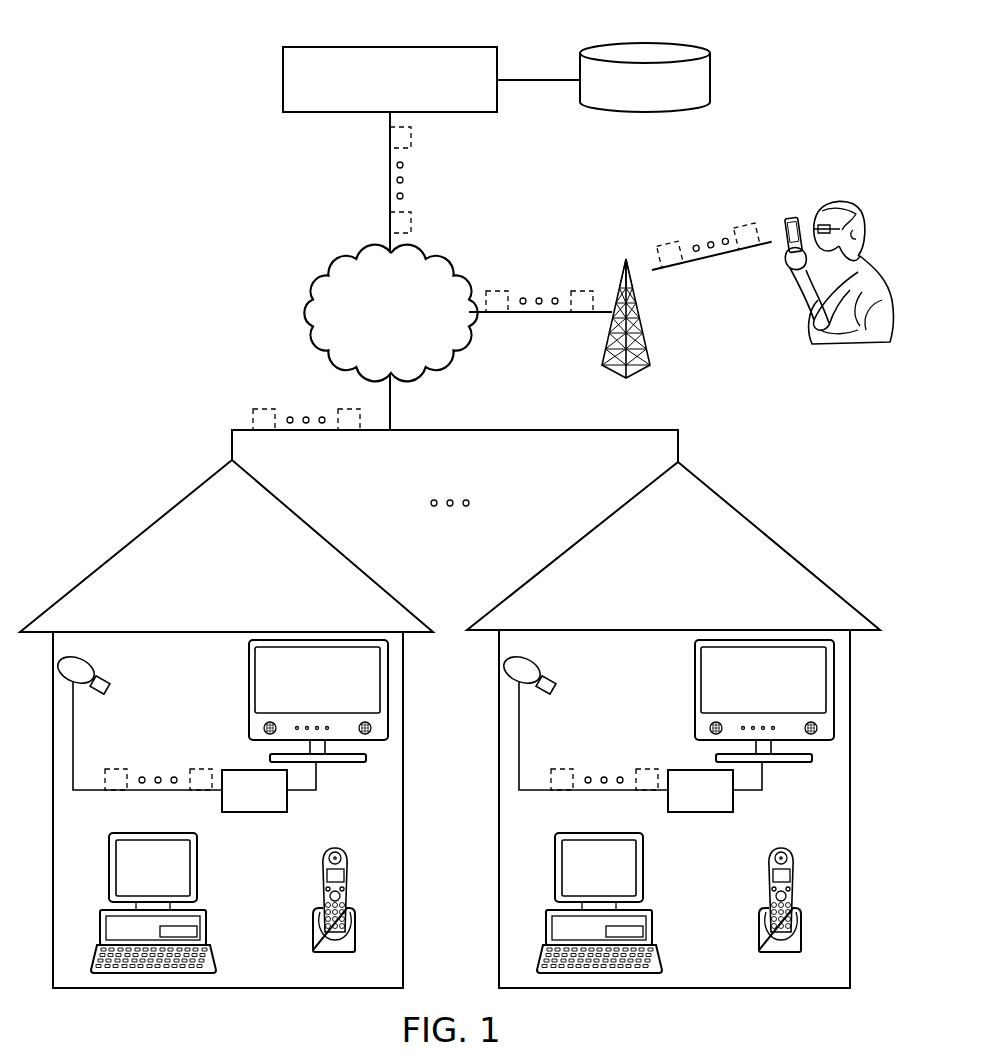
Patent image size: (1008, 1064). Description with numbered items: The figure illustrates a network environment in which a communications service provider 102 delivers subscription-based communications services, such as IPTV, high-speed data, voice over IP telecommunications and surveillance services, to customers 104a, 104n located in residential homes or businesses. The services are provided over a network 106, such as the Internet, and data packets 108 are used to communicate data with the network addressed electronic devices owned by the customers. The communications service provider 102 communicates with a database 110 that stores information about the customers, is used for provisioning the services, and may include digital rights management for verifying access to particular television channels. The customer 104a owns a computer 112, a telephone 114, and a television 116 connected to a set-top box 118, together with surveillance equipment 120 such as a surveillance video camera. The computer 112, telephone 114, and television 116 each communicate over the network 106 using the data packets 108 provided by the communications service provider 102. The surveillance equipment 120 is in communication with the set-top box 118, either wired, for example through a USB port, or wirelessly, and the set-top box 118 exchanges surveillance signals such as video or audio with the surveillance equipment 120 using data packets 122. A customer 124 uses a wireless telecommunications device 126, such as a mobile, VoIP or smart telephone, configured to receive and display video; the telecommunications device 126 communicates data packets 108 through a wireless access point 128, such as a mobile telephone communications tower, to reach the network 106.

The communications service provider 102 is at (283, 80).
The customer 104a is at (125, 548).
The customer 104n is at (782, 547).
The network 106 is at (335, 268).
The data packets 108 is at (411, 214).
The database 110 is at (710, 84).
The computer 112 is at (197, 870).
The telephone 114 is at (320, 862).
The television 116 is at (296, 697).
The set-top box 118 is at (287, 804).
The surveillance equipment 120 is at (92, 663).
The data packets 122 is at (110, 769).
The customer 124 is at (827, 252).
The telecommunications device 126 is at (790, 216).
The wireless access point 128 is at (640, 312).